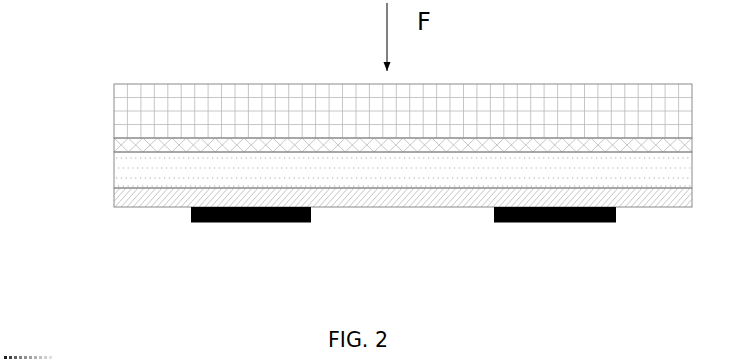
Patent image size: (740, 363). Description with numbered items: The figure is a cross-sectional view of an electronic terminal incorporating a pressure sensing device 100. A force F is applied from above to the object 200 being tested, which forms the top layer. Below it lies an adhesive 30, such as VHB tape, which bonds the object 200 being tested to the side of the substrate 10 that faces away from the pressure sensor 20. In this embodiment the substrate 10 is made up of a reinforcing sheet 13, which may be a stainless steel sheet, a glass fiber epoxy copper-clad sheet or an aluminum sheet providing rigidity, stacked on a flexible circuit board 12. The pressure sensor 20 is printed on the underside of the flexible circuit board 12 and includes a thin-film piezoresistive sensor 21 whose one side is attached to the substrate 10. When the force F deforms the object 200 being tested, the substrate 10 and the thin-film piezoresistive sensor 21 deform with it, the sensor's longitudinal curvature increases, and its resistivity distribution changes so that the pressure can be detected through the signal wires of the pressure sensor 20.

The pressure sensing device 100 is at (367, 195).
The object being tested 200 is at (142, 108).
The adhesive 30 is at (138, 142).
The substrate 10 is at (372, 225).
The reinforcing sheet 13 is at (142, 168).
The flexible circuit board 12 is at (143, 198).
The pressure sensor 20 is at (403, 256).
The thin-film piezoresistive sensor 21 is at (222, 222).